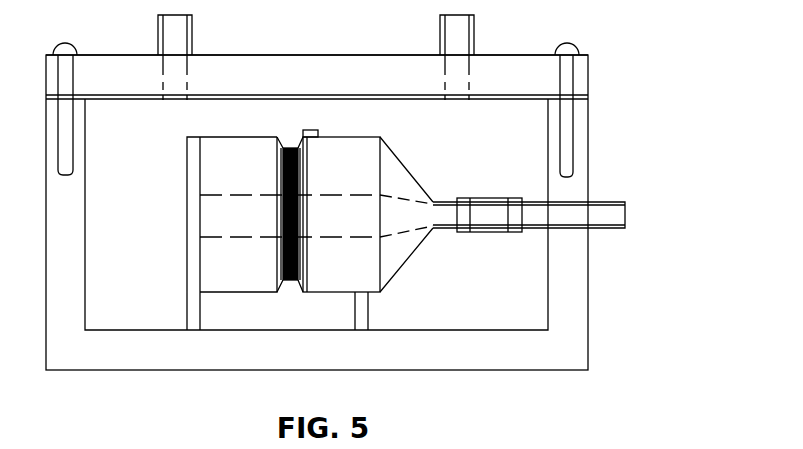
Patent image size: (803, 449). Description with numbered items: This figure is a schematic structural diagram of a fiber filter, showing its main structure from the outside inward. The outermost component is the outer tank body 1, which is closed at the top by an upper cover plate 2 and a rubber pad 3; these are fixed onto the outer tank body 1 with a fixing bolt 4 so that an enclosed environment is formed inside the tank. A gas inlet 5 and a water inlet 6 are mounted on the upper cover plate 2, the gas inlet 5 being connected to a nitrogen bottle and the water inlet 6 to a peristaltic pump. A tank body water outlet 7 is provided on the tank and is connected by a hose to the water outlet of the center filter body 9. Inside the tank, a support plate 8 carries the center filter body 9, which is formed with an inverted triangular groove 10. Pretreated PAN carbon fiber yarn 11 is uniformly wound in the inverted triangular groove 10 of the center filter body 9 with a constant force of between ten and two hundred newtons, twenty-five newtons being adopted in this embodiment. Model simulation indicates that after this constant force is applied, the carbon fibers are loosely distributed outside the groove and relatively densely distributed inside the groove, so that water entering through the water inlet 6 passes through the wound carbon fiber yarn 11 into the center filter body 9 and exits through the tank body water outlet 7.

The outer tank body 1 is at (588, 173).
The upper cover plate 2 is at (588, 72).
The rubber pad 3 is at (588, 95).
The fixing bolt 4 is at (578, 142).
The gas inlet 5 is at (158, 33).
The water inlet 6 is at (475, 33).
The tank body water outlet 7 is at (602, 202).
The support plate 8 is at (368, 310).
The center filter body 9 is at (428, 202).
The inverted triangular groove 10 is at (280, 148).
The carbon fiber yarn 11 is at (288, 150).